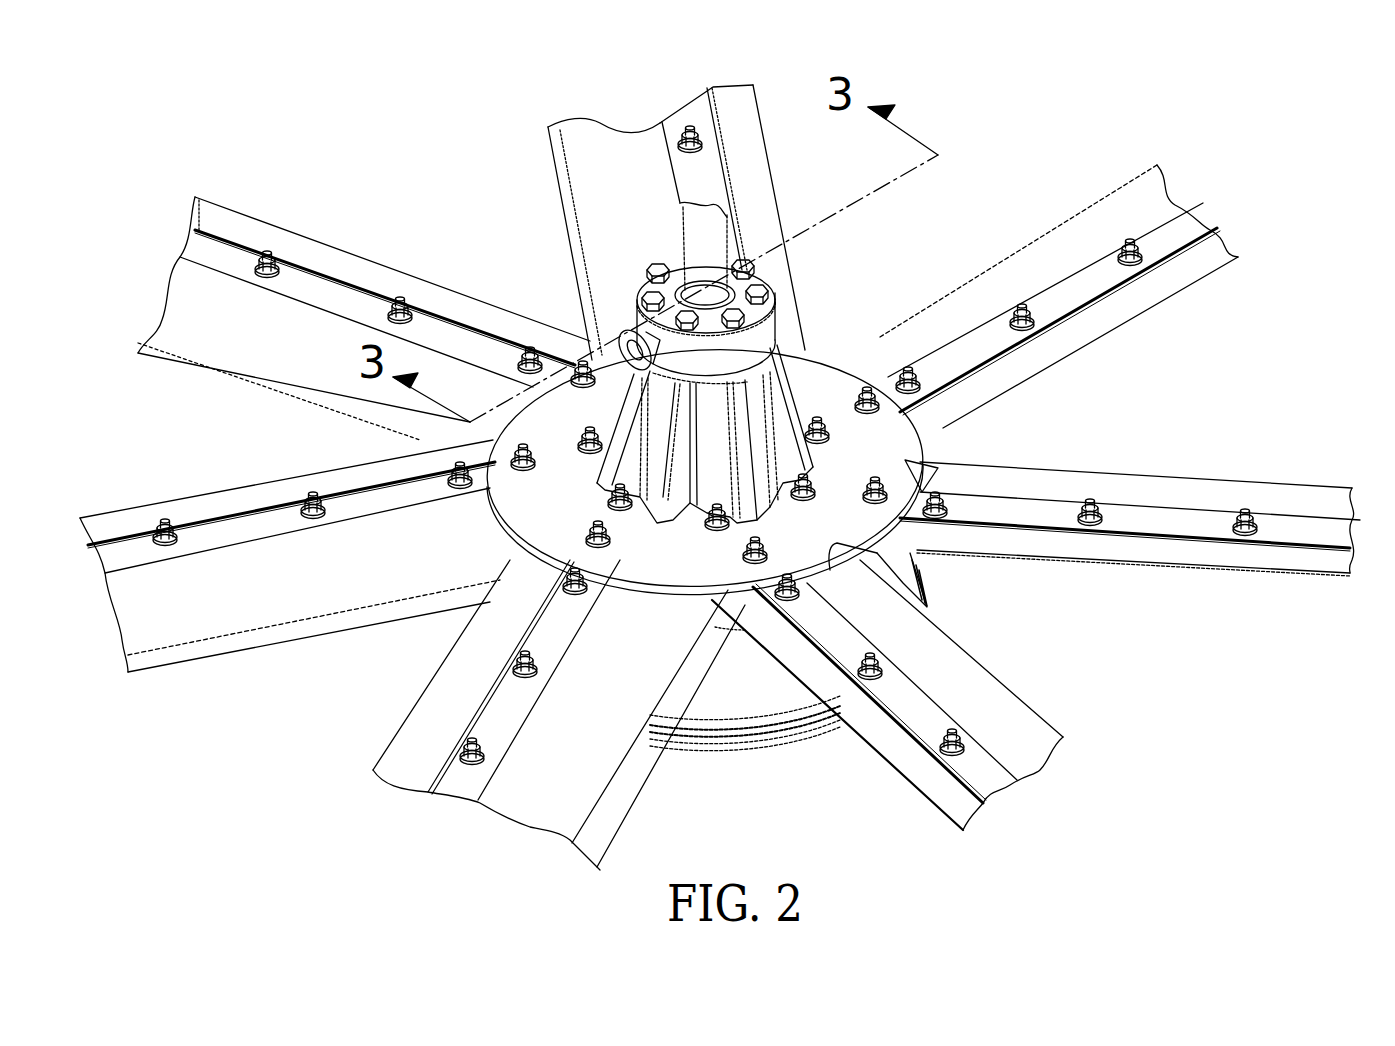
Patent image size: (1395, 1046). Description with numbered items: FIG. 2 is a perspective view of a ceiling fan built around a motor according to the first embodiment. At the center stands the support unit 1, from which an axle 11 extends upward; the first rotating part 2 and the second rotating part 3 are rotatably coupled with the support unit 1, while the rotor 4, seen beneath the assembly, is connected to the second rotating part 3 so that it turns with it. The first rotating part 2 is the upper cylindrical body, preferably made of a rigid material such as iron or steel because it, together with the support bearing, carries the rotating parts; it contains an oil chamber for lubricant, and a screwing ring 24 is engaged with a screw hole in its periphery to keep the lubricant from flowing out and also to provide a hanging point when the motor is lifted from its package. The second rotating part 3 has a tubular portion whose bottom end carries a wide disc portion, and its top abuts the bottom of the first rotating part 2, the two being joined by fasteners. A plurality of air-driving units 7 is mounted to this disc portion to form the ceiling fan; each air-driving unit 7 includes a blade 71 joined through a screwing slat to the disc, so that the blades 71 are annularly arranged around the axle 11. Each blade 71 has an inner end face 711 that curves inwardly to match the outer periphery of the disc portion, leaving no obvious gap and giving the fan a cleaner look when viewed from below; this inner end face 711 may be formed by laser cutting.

The support unit 1 is at (730, 192).
The axle 11 is at (700, 253).
The first rotating part 2 is at (782, 322).
The screwing ring 24 is at (626, 338).
The second rotating part 3 is at (815, 385).
The rotor 4 is at (721, 712).
The air-driving unit 7 is at (1036, 594).
The blade 71 is at (985, 682).
The inner end face 711 is at (920, 465).